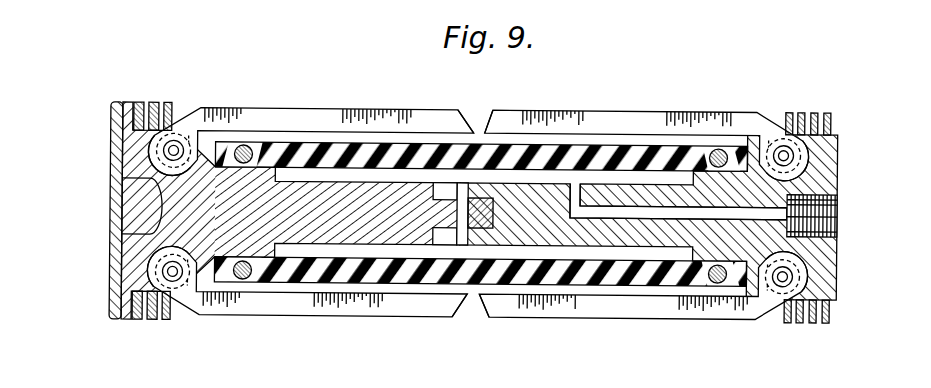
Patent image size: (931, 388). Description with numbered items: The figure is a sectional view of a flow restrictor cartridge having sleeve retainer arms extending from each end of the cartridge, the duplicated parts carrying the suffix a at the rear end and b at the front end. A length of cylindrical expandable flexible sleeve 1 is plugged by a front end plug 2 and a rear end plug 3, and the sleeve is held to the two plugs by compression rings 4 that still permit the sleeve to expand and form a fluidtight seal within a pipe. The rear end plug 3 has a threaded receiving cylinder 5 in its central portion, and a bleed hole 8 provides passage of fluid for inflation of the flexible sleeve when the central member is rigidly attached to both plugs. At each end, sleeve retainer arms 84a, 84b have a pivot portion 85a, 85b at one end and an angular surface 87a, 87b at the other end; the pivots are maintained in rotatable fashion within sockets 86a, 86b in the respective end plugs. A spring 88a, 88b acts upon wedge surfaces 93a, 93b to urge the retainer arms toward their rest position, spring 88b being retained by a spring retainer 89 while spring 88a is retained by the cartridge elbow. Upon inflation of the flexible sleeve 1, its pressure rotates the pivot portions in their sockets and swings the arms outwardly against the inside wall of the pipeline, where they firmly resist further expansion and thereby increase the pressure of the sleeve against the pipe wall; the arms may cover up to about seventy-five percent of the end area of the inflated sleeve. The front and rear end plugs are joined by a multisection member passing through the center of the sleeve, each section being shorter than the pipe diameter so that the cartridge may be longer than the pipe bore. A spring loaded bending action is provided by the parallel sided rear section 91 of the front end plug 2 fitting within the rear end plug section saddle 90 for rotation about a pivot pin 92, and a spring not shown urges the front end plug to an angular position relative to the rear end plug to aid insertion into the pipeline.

The expandable flexible sleeve 1 is at (314, 296).
The front end plug 2 is at (133, 251).
The rear end plug 3 is at (820, 246).
The compression rings 4 is at (240, 281).
The threaded receiving cylinder 5 is at (832, 206).
The bleed hole 8 is at (577, 189).
The sleeve retainer arm 84a is at (645, 112).
The sleeve retainer arm 84b is at (316, 112).
The pivot portion 85a is at (790, 152).
The pivot portion 85b is at (170, 153).
The socket 86a is at (810, 154).
The socket 86b is at (125, 168).
The angular surface 87a is at (490, 128).
The angular surface 87b is at (465, 125).
The spring 88a is at (800, 108).
The spring 88b is at (140, 103).
The spring retainer 89 is at (110, 215).
The rear end plug section saddle 90 is at (447, 249).
The parallel sided rear section 91 is at (493, 213).
The pivot pin 92 is at (457, 209).
The wedge surface 93a is at (772, 112).
The wedge surface 93b is at (190, 112).